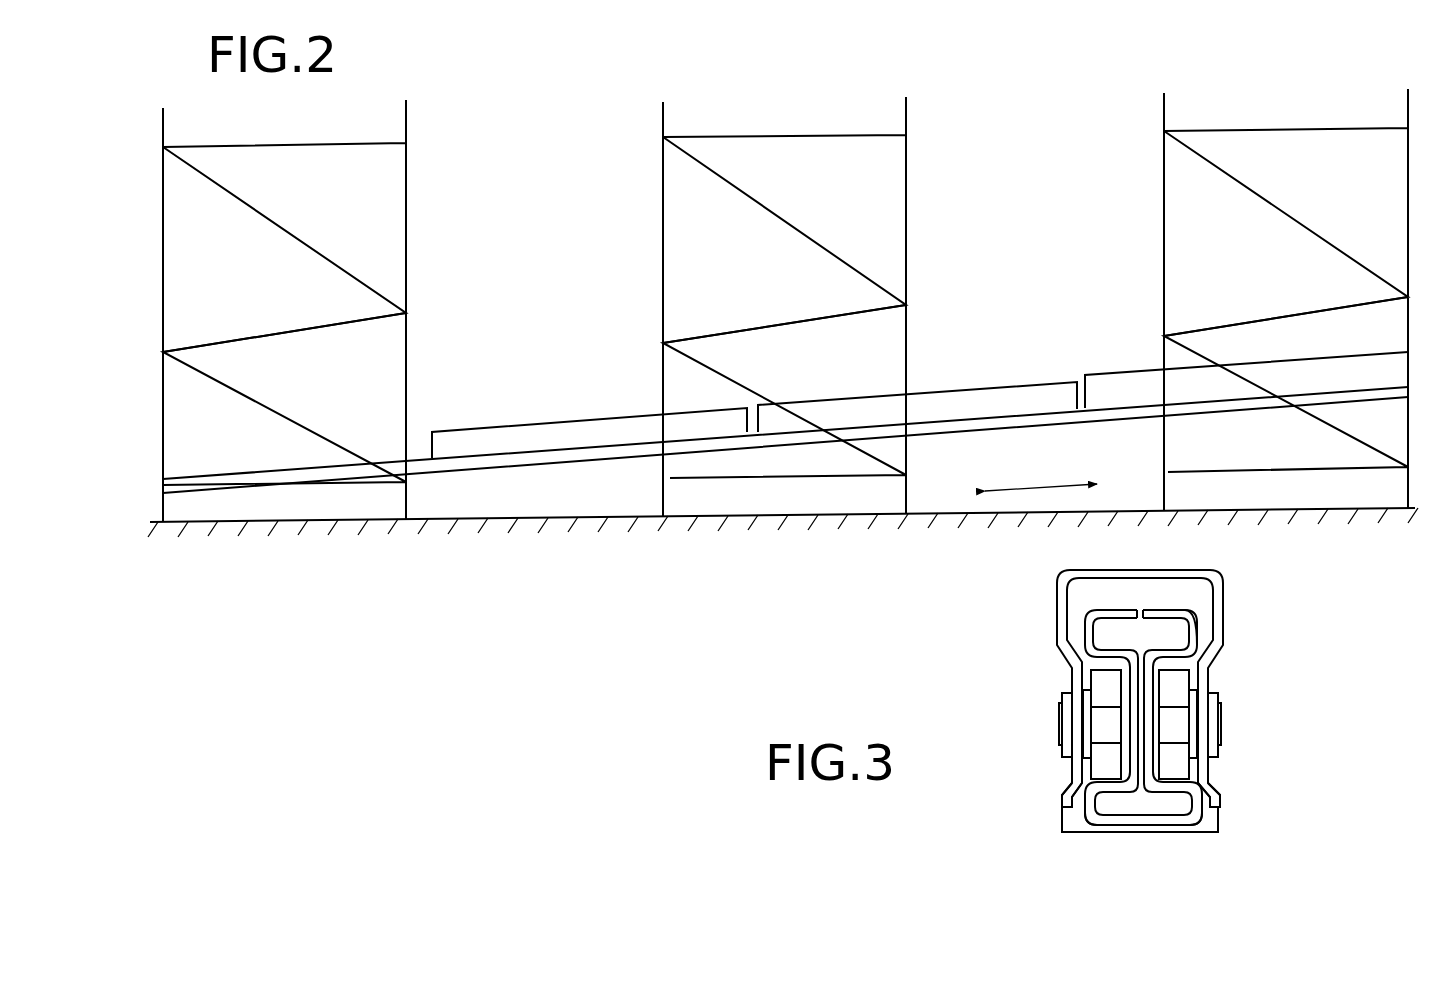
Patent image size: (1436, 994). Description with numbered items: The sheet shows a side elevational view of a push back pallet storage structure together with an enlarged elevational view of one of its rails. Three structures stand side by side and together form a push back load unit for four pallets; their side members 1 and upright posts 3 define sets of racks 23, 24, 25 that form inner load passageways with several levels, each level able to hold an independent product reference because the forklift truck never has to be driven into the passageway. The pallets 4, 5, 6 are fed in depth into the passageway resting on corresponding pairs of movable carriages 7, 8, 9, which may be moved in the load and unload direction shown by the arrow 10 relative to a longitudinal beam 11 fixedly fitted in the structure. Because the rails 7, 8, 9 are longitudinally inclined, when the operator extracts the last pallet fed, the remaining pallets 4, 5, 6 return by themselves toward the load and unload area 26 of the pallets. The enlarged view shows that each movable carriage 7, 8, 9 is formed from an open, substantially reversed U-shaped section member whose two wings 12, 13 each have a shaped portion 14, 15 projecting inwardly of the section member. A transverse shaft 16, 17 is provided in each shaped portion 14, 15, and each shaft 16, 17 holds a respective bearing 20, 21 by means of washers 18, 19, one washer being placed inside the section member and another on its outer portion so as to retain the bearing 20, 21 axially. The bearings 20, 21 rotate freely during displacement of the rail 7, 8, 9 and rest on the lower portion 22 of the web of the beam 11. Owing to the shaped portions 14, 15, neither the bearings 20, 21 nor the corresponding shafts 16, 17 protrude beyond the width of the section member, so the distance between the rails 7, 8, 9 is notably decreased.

In FIG. 2, the side member 1 is at (303, 328).
In FIG. 2, the upright post 3 is at (406, 226).
In FIG. 2, the pallet 4 is at (566, 438).
In FIG. 2, the pallet 5 is at (948, 409).
In FIG. 2, the pallet 6 is at (1146, 377).
In FIG. 2, the movable carriage 7 is at (1008, 427).
In FIG. 3, the movable carriage 7 is at (1050, 586).
In FIG. 3, the movable carriage 8 is at (1143, 717).
In FIG. 3, the movable carriage 9 is at (1140, 819).
In FIG. 2, the arrow 10 is at (1046, 490).
In FIG. 3, the longitudinal beam 11 is at (1195, 627).
In FIG. 3, the wing 12 is at (1067, 797).
In FIG. 3, the wing 13 is at (1217, 797).
In FIG. 3, the shaped portion 14 is at (1078, 707).
In FIG. 3, the shaped portion 15 is at (1203, 685).
In FIG. 3, the transverse shaft 16 is at (1108, 725).
In FIG. 3, the transverse shaft 17 is at (1177, 727).
In FIG. 3, the washer 18 is at (1092, 750).
In FIG. 3, the washer 19 is at (1212, 717).
In FIG. 3, the bearing 20 is at (1111, 692).
In FIG. 3, the bearing 21 is at (1177, 683).
In FIG. 3, the lower portion of the web 22 is at (1108, 782).
In FIG. 2, the rack 23 is at (428, 152).
In FIG. 2, the rack 24 is at (913, 123).
In FIG. 2, the rack 25 is at (1323, 111).
In FIG. 2, the load and unload area 26 is at (151, 503).